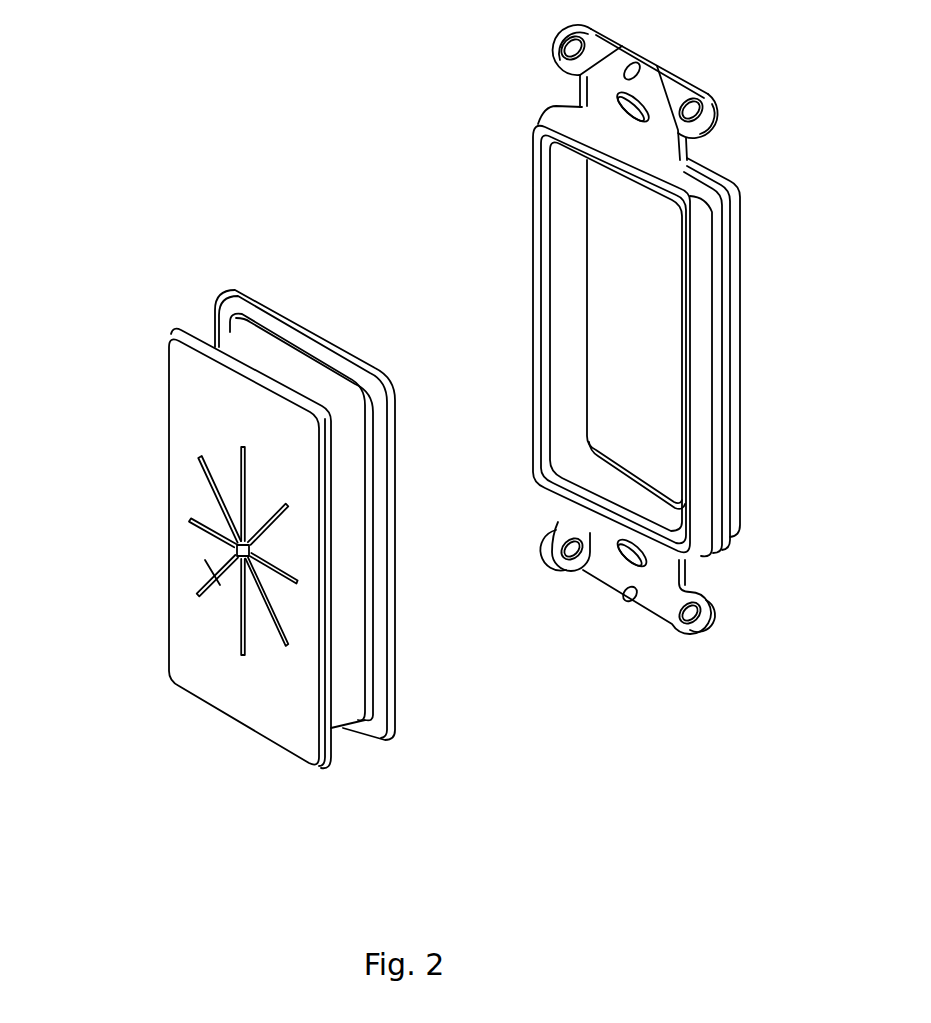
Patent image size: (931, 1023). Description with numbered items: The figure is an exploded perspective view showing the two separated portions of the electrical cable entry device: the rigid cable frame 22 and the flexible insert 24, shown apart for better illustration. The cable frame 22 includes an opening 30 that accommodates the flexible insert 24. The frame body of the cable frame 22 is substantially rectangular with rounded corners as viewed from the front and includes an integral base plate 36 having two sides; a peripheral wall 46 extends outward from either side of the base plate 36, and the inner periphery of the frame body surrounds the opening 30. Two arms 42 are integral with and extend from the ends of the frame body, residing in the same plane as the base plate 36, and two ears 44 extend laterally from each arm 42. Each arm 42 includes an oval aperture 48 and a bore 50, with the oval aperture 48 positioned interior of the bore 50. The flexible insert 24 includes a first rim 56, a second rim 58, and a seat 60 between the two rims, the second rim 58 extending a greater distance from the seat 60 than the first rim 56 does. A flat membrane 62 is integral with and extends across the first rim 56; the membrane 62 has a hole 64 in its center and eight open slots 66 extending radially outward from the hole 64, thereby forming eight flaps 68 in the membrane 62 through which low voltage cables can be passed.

The rigid cable frame 22 is at (480, 94).
The flexible insert 24 is at (160, 281).
The opening 30 is at (630, 330).
The base plate 36 is at (729, 255).
The arms 42 is at (628, 130).
The ears 44 is at (552, 538).
The peripheral wall 46 is at (540, 238).
The oval aperture 48 is at (628, 590).
The bore 50 is at (633, 553).
The first rim 56 is at (323, 768).
The second rim 58 is at (387, 738).
The seat 60 is at (270, 362).
The membrane 62 is at (212, 401).
The hole 64 is at (233, 560).
The open slots 66 is at (217, 498).
The flaps 68 is at (230, 590).